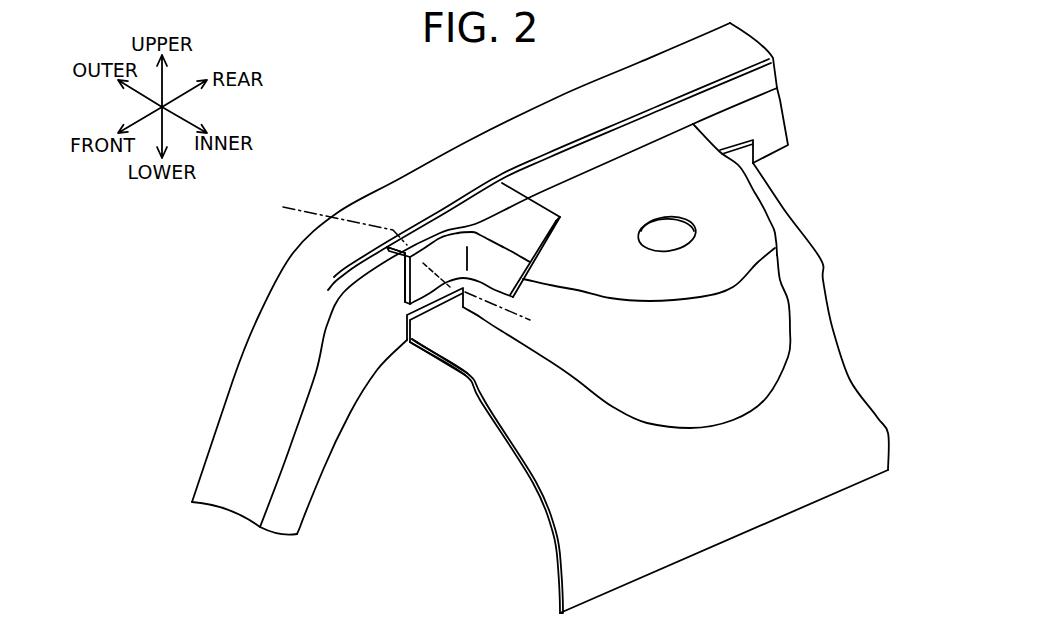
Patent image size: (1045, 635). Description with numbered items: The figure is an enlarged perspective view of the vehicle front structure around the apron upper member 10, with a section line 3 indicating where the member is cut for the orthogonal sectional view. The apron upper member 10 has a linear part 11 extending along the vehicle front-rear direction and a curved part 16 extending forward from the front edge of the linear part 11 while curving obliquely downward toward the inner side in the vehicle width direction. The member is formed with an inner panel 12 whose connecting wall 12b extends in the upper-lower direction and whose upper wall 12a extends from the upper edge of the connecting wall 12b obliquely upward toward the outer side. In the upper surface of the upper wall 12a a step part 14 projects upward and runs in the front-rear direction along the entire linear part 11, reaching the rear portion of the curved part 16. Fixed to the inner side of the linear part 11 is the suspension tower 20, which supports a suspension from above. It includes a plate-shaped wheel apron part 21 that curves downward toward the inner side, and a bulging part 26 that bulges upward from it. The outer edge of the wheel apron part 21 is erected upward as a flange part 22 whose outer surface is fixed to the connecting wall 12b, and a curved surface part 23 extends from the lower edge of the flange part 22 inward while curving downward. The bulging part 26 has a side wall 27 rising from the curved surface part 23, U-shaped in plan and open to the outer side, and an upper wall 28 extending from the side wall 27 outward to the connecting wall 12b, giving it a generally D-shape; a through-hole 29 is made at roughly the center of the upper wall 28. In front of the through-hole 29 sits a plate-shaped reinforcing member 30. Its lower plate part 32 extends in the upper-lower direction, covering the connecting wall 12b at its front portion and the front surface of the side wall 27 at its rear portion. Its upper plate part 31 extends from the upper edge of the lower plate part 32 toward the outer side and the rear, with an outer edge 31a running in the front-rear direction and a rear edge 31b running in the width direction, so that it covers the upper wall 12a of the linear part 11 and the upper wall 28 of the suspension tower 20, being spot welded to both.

The sectional view line 3 is at (260, 197).
The apron upper member 10 is at (511, 278).
The linear part 11 is at (526, 108).
The inner panel 12 is at (793, 92).
The upper wall 12a is at (748, 44).
The connecting wall 12b is at (777, 133).
The step part 14 is at (577, 143).
The curved part 16 is at (222, 413).
The suspension tower 20 is at (630, 360).
The wheel apron part 21 is at (570, 281).
The flange part 22 is at (407, 330).
The curved surface part 23 is at (438, 377).
The bulging part 26 is at (627, 353).
The side wall 27 is at (725, 363).
The upper wall 28 is at (690, 277).
The through-hole 29 is at (665, 224).
The reinforcing member 30 is at (505, 232).
The upper plate part 31 is at (499, 232).
The outer edge 31a is at (409, 238).
The rear edge 31b is at (547, 204).
The lower plate part 32 is at (520, 278).